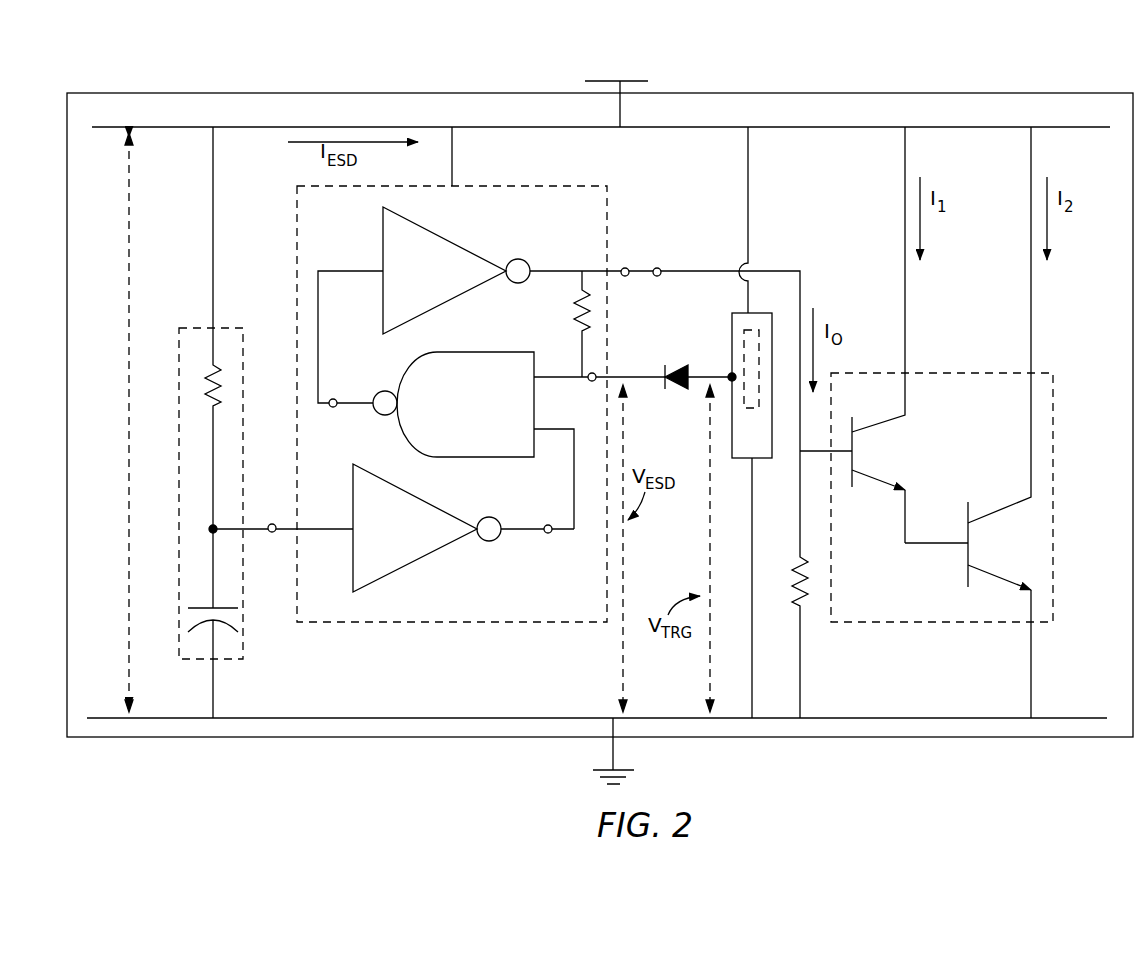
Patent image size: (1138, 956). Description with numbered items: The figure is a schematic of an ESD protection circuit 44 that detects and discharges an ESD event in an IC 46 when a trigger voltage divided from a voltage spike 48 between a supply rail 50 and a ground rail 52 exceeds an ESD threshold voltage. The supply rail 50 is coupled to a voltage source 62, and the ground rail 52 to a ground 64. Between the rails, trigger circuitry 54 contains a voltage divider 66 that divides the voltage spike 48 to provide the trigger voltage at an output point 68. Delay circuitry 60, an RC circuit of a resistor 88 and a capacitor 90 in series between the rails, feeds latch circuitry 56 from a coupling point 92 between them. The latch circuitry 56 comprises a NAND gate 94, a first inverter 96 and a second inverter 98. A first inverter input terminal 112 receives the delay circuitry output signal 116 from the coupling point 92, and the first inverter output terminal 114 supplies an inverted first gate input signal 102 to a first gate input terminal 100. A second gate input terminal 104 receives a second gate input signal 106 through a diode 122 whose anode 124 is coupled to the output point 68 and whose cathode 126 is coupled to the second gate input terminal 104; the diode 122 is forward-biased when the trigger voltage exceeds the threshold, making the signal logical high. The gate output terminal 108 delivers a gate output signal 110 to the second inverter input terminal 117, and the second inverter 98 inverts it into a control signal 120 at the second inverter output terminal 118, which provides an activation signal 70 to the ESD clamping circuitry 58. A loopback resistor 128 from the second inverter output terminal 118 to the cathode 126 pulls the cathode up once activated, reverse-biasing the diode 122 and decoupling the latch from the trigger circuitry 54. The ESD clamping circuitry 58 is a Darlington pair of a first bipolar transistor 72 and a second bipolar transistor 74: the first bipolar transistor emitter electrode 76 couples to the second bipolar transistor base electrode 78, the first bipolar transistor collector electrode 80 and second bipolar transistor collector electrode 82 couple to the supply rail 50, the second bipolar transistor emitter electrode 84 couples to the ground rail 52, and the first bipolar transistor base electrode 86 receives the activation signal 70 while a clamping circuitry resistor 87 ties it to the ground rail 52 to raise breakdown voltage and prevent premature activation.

The ESD protection circuit 44 is at (1038, 93).
The IC 46 is at (142, 66).
The voltage spike 48 is at (135, 222).
The supply rail 50 is at (155, 128).
The ground rail 52 is at (170, 718).
The trigger circuitry 54 is at (758, 313).
The latch circuitry 56 is at (505, 186).
The ESD clamping circuitry 58 is at (1053, 395).
The delay circuitry 60 is at (197, 328).
The voltage source 62 is at (655, 70).
The ground 64 is at (645, 778).
The voltage divider 66 is at (752, 408).
The output point 68 is at (728, 370).
The activation signal 70 is at (657, 268).
The first bipolar transistor 72 is at (858, 459).
The second bipolar transistor 74 is at (975, 550).
The first bipolar transistor emitter electrode 76 is at (905, 507).
The second bipolar transistor base electrode 78 is at (928, 543).
The first bipolar transistor collector electrode 80 is at (905, 395).
The second bipolar transistor collector electrode 82 is at (1031, 428).
The second bipolar transistor emitter electrode 84 is at (1031, 650).
The first bipolar transistor base electrode 86 is at (852, 460).
The clamping circuitry resistor 87 is at (793, 592).
The resistor 88 is at (218, 366).
The capacitor 90 is at (222, 608).
The coupling point 92 is at (220, 520).
The NAND gate 94 is at (490, 457).
The first inverter 96 is at (430, 560).
The second inverter 98 is at (455, 243).
The first gate input terminal 100 is at (548, 429).
The first gate input signal 102 is at (548, 533).
The second gate input terminal 104 is at (556, 377).
The second gate input signal 106 is at (592, 381).
The gate output terminal 108 is at (378, 392).
The gate output signal 110 is at (333, 407).
The first inverter input terminal 112 is at (315, 530).
The first inverter output terminal 114 is at (503, 530).
The delay circuitry output signal 116 is at (272, 533).
The second inverter input terminal 117 is at (343, 271).
The second inverter output terminal 118 is at (562, 271).
The control signal 120 is at (625, 268).
The diode 122 is at (668, 365).
The anode 124 is at (698, 383).
The cathode 126 is at (648, 381).
The loopback resistor 128 is at (574, 320).